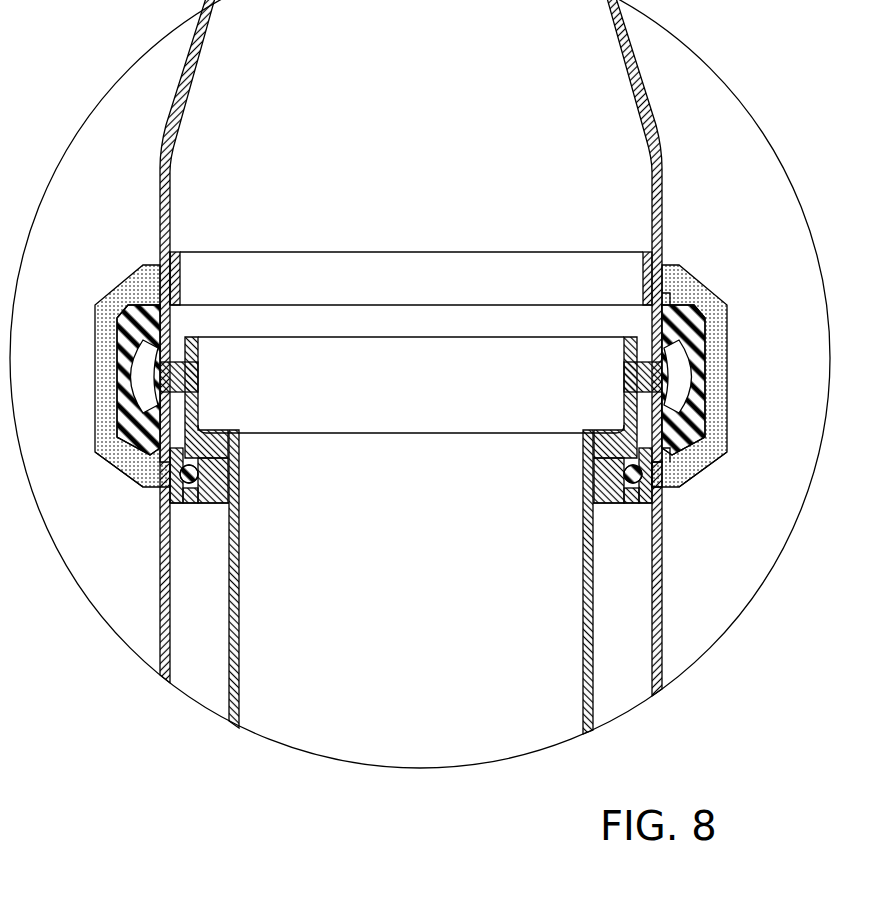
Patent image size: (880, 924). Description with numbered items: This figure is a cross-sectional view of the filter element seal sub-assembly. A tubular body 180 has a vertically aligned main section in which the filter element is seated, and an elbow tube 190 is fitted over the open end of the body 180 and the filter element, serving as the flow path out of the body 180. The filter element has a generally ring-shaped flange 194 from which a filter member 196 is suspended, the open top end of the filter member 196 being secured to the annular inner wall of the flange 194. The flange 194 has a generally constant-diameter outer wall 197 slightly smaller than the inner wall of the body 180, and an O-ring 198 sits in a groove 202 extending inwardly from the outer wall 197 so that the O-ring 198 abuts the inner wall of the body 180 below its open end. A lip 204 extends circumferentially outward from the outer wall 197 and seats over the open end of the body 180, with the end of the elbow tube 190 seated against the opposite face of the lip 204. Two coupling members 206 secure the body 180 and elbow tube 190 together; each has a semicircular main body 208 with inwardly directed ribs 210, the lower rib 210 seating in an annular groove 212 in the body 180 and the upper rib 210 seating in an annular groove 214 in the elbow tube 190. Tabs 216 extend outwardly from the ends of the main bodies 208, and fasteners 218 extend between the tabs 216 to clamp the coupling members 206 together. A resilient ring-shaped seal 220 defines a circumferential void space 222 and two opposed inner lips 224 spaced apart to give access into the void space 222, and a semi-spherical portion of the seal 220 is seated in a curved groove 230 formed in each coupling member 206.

The body 180 is at (662, 627).
The elbow tube 190 is at (160, 168).
The flange 194 is at (466, 413).
The filter member 196 is at (365, 645).
The outer wall 197 is at (198, 350).
The O-ring 198 is at (683, 485).
The groove 202 is at (197, 462).
The lip 204 is at (170, 381).
The coupling member 206 is at (113, 288).
The main body 208 is at (97, 366).
The rib 210 is at (182, 253).
The annular groove 212 is at (180, 503).
The annular groove 214 is at (643, 292).
The tab 216 is at (637, 348).
The fastener 218 is at (690, 289).
The seal 220 is at (708, 413).
The void space 222 is at (682, 378).
The lip 224 is at (182, 298).
The curved groove 230 is at (117, 428).